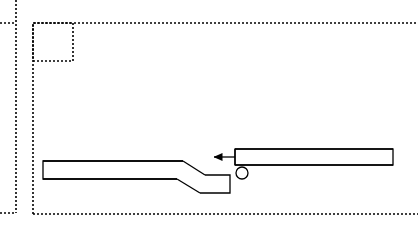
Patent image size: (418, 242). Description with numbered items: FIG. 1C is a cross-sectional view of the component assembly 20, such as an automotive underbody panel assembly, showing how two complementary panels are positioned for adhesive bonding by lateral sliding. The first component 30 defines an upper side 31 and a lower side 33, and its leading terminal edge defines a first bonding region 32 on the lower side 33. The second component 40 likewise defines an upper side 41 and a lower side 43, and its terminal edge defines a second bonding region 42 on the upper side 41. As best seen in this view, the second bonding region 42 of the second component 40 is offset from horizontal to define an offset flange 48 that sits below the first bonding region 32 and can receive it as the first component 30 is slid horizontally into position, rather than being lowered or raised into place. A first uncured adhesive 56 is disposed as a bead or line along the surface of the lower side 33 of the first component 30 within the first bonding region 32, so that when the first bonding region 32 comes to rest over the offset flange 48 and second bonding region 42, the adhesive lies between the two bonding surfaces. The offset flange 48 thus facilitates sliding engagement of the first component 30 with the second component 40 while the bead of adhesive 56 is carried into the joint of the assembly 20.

The component assembly 20 is at (160, 77).
The first component 30 is at (326, 162).
The upper side 31 is at (279, 149).
The first bonding region 32 is at (247, 162).
The lower side 33 is at (280, 166).
The second component 40 is at (126, 166).
The upper side 41 is at (70, 161).
The second bonding region 42 is at (213, 186).
The lower side 43 is at (72, 181).
The offset flange 48 is at (217, 174).
The first uncured adhesive 56 is at (247, 179).